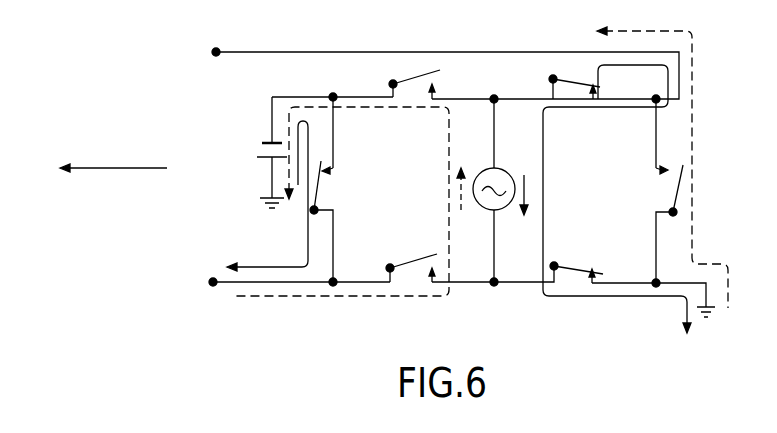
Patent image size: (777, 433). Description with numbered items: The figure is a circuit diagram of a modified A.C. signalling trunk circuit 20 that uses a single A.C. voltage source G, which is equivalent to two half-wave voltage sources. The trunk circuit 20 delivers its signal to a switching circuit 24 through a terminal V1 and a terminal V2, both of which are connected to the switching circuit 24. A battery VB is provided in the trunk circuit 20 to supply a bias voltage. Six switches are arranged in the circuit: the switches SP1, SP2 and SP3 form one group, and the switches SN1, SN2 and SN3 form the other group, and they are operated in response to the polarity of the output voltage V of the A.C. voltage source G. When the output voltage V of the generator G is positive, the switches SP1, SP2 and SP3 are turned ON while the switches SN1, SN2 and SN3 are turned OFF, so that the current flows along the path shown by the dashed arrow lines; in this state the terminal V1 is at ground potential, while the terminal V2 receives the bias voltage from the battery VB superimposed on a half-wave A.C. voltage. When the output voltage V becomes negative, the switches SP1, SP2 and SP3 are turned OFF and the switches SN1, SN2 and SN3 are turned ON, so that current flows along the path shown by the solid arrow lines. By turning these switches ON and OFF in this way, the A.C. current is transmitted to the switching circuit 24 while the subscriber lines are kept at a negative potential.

The A.C. signalling trunk circuit 20 is at (303, 30).
The switching circuit 24 is at (143, 226).
The terminal V1 is at (428, 69).
The terminal V2 is at (282, 282).
The battery VB is at (253, 152).
The switch SP2 is at (378, 85).
The switch SN1 is at (597, 83).
The switch SN3 is at (344, 191).
The switch SP3 is at (403, 258).
The switch SN2 is at (581, 261).
The switch SP1 is at (649, 191).
The A.C. voltage source G is at (494, 190).
The output voltage V is at (514, 178).